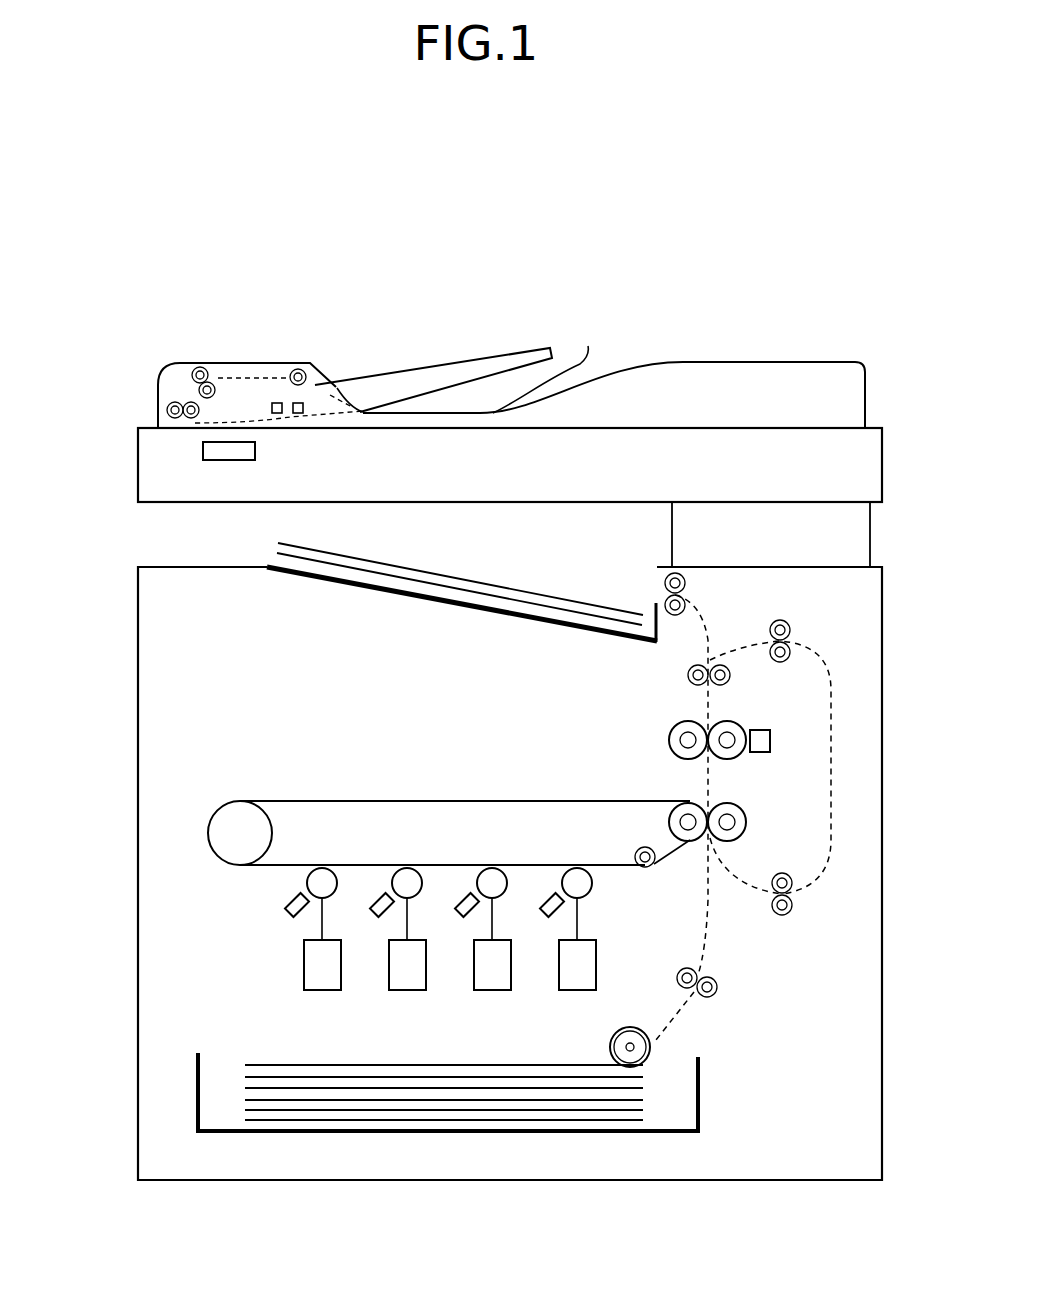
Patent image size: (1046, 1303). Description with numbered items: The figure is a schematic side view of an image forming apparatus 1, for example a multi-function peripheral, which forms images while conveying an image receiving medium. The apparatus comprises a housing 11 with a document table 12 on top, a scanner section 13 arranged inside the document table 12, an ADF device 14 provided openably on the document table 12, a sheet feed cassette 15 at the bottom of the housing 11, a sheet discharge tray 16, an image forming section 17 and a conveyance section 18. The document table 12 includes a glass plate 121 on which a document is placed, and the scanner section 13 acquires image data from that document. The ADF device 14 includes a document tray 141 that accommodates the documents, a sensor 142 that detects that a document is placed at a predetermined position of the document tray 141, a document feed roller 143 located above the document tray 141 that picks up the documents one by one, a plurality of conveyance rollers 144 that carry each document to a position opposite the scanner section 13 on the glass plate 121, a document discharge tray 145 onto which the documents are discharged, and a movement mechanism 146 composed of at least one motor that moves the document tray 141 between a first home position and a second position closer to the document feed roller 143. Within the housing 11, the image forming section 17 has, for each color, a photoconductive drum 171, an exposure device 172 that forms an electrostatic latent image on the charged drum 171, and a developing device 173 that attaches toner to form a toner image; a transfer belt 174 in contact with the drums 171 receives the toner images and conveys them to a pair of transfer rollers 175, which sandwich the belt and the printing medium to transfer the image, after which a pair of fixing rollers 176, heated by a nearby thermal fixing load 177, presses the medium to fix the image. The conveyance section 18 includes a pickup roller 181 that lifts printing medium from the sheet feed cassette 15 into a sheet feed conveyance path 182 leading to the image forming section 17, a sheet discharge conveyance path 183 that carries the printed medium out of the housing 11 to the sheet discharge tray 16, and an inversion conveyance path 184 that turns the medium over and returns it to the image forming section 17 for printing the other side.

The image forming apparatus 1 is at (514, 250).
The housing 11 is at (138, 645).
The document table 12 is at (138, 466).
The glass plate 121 is at (452, 430).
The scanner section 13 is at (233, 462).
The ADF device 14 is at (245, 372).
The document tray 141 is at (397, 380).
The sensor 142 is at (272, 408).
The document feed roller 143 is at (298, 368).
The conveyance rollers 144 is at (201, 366).
The document discharge tray 145 is at (614, 375).
The movement mechanism 146 is at (341, 388).
The sheet feed cassette 15 is at (198, 1090).
The sheet discharge tray 16 is at (358, 580).
The image forming section 17 is at (449, 788).
The drum 171 is at (322, 868).
The exposure device 172 is at (322, 992).
The developing device 173 is at (287, 914).
The transfer belt 174 is at (572, 800).
The pair of transfer rollers 175 is at (735, 806).
The pair of fixing rollers 176 is at (698, 722).
The thermal fixing load 177 is at (772, 729).
The conveyance section 18 is at (742, 957).
The pickup roller 181 is at (634, 1026).
The sheet feed conveyance path 182 is at (702, 930).
The sheet discharge conveyance path 183 is at (712, 632).
The inversion conveyance path 184 is at (833, 775).